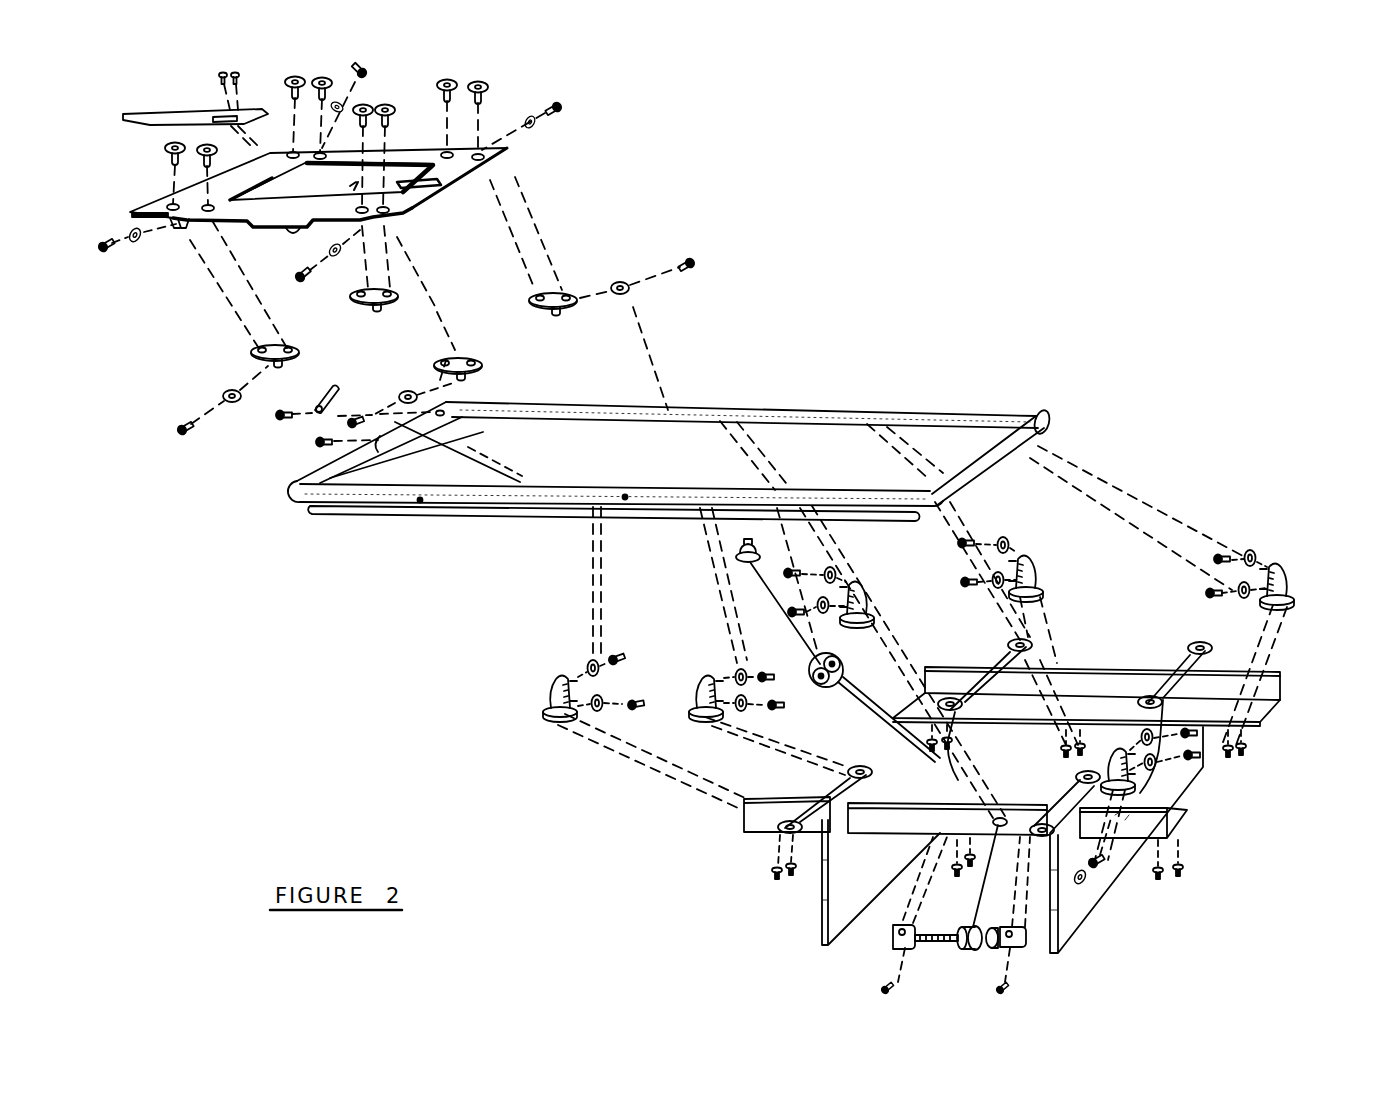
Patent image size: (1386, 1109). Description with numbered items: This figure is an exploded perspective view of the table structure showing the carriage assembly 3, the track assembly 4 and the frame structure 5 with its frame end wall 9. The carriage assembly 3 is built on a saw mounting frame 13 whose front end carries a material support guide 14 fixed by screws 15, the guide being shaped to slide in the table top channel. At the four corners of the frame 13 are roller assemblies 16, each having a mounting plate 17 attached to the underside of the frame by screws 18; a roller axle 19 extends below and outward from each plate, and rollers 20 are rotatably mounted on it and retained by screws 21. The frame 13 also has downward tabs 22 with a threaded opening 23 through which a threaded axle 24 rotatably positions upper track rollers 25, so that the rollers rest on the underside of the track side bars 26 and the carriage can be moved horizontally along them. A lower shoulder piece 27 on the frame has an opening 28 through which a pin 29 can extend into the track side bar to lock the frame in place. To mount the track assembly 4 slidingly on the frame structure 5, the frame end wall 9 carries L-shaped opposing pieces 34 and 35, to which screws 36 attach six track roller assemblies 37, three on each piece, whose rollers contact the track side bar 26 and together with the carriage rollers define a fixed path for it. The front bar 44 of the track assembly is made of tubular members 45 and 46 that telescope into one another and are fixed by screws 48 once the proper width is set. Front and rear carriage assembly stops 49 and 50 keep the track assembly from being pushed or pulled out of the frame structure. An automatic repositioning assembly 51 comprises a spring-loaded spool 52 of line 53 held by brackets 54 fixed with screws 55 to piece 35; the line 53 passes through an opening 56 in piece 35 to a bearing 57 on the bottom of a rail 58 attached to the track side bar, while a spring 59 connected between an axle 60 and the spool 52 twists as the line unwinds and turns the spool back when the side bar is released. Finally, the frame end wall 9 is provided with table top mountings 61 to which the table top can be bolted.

The carriage assembly 3 is at (590, 173).
The track assembly 4 is at (1137, 391).
The frame structure 5 is at (1255, 823).
The frame end wall 9 is at (1068, 920).
The frame 13 is at (398, 207).
The material support guide 14 is at (167, 113).
The screws 15 is at (220, 78).
The roller assemblies 16 is at (195, 360).
The mounting plate 17 is at (290, 352).
The screws 18 is at (166, 152).
The roller axle 19 is at (280, 375).
The rollers 20 is at (227, 392).
The screws 21 is at (178, 426).
The tabs 22 is at (182, 230).
The threaded opening 23 is at (174, 226).
The threaded axle 24 is at (102, 250).
The upper track rollers 25 is at (133, 230).
The track side bars 26 is at (710, 413).
The lower shoulder piece 27 is at (293, 232).
The opening 28 is at (290, 245).
The pin 29 is at (350, 190).
The L-shaped piece 34 is at (1267, 688).
The L-shaped piece 35 is at (1182, 820).
The screws 36 is at (1247, 749).
The track roller assemblies 37 is at (540, 698).
The front bar 44 is at (307, 468).
The tubular member 45 is at (367, 463).
The tubular member 46 is at (403, 437).
The screws 48 is at (318, 460).
The front carriage assembly stop 49 is at (327, 399).
The rear carriage assembly stop 50 is at (1044, 410).
The automatic repositioning assembly 51 is at (884, 947).
The spring-loaded spool 52 is at (965, 950).
The line 53 is at (760, 590).
The brackets 54 is at (898, 927).
The screws 55 is at (898, 975).
The opening 56 is at (1003, 820).
The bearing 57 is at (737, 562).
The rail 58 is at (668, 520).
The spring 59 is at (957, 912).
The axle 60 is at (998, 950).
The table top mountings 61 is at (1197, 642).